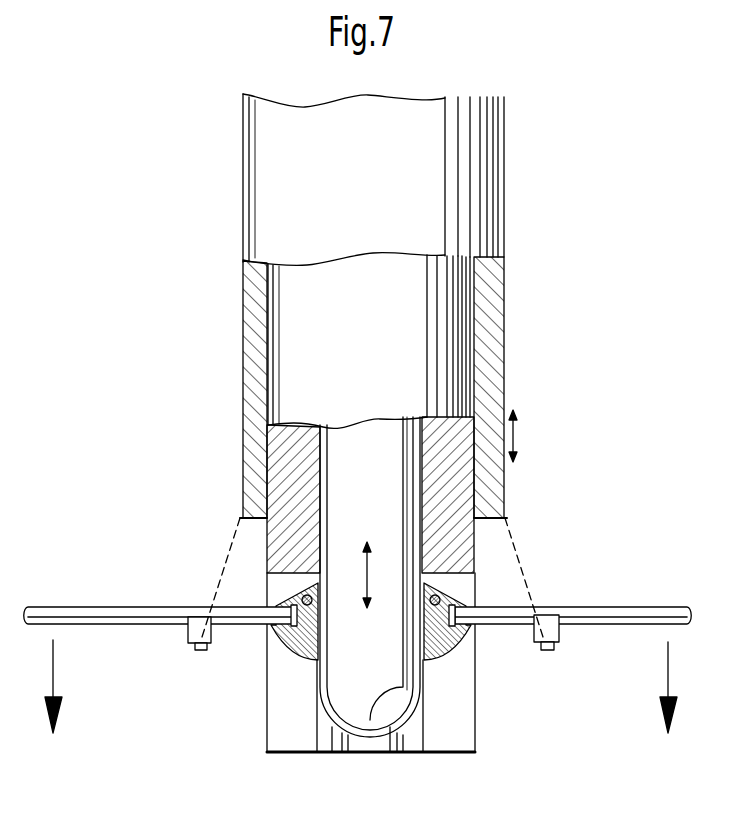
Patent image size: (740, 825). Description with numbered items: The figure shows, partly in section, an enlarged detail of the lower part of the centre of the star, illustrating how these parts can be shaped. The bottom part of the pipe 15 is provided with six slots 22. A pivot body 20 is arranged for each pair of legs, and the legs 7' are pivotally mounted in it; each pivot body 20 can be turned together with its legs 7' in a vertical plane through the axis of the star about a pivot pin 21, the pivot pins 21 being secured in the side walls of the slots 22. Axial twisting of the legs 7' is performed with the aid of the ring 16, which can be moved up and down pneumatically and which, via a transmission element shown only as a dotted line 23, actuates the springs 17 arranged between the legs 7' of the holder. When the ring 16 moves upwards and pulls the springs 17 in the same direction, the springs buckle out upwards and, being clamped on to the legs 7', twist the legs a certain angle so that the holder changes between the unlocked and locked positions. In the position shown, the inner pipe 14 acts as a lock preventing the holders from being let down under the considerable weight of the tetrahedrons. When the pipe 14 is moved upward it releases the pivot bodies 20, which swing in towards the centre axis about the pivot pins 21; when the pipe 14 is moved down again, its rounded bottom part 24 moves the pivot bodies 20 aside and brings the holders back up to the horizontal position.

The pipe 14 is at (350, 495).
The pipe 15 is at (458, 390).
The ring 16 is at (493, 302).
The spring 17 is at (555, 625).
The pivot body 20 is at (463, 642).
The pivot pin 21 is at (453, 595).
The slot 22 is at (284, 734).
The transmission element 23 is at (223, 567).
The rounded bottom part 24 is at (367, 722).
The leg 7' is at (358, 601).